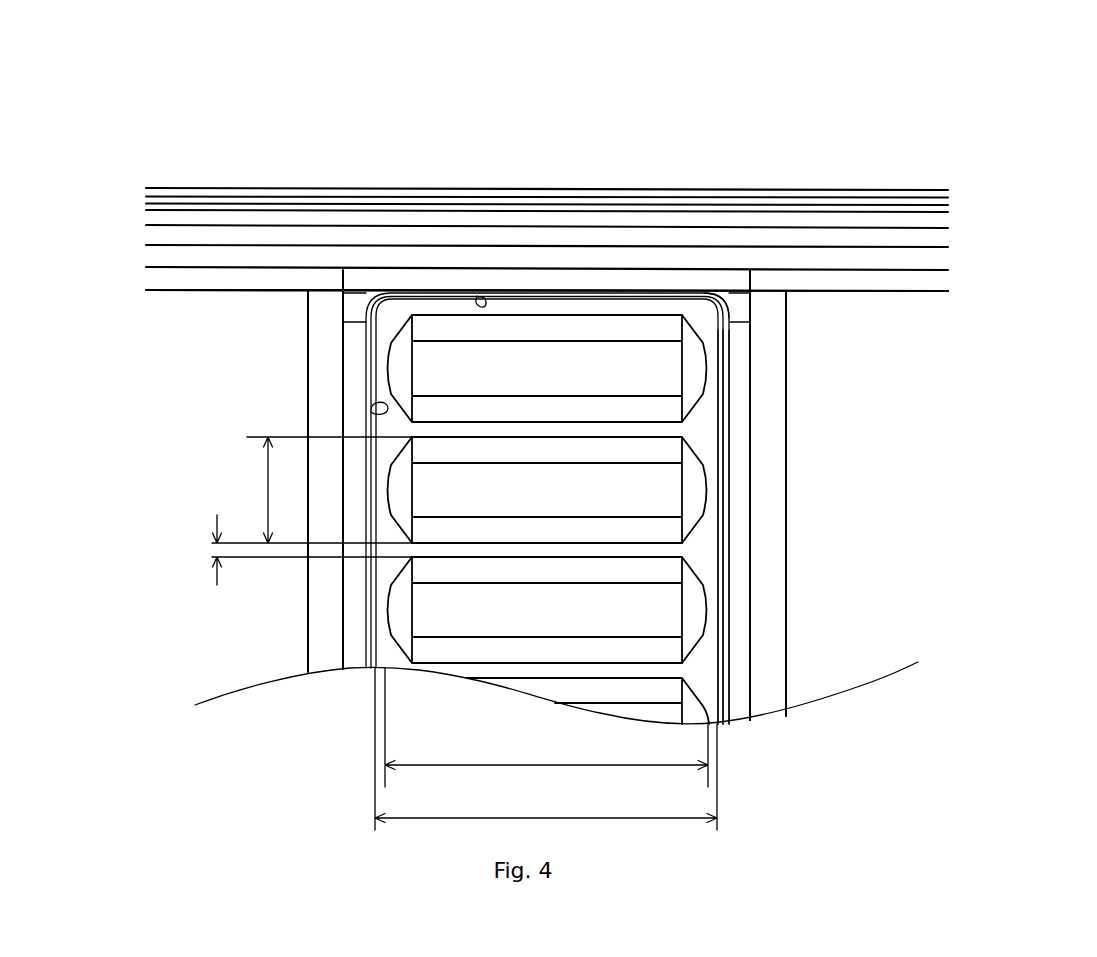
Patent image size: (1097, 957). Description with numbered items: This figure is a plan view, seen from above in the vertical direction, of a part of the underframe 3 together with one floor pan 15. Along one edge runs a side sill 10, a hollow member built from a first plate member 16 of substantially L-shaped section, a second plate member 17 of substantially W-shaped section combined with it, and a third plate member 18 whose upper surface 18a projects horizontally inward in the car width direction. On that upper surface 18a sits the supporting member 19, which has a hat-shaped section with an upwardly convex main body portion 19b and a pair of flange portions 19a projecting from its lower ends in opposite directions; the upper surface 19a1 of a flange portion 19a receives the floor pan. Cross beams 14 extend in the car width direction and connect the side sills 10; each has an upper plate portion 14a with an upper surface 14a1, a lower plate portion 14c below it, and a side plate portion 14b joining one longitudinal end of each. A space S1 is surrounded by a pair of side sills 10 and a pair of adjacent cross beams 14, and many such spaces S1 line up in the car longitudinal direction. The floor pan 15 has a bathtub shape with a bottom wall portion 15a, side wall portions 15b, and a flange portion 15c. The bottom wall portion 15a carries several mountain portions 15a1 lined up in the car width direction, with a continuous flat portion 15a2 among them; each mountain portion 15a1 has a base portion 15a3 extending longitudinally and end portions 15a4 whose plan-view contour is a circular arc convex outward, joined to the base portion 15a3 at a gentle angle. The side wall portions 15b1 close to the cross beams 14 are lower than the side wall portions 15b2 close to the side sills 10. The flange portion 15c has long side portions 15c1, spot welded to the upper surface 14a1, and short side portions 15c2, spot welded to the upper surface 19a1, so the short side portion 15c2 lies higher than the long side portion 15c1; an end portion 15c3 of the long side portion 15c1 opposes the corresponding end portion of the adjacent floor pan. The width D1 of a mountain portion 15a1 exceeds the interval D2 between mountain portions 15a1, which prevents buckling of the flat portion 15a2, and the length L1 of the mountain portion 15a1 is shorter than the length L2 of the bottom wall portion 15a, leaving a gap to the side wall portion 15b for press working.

The underframe 3 is at (948, 114).
The side sill 10 is at (856, 179).
The first plate member 16 is at (942, 195).
The second plate member 17 is at (942, 202).
The third plate member 18 is at (942, 218).
The upper surface 18a is at (942, 224).
The supporting member 19 is at (1010, 232).
The flange portion 19a is at (945, 278).
The upper surface 19a1 is at (148, 277).
The main body portion 19b is at (945, 258).
The cross beam 14 is at (298, 322).
The upper plate portion 14a is at (770, 655).
The upper surface 14a1 is at (768, 367).
The side plate portion 14b is at (728, 683).
The lower plate portion 14c is at (745, 697).
The floor pan 15 is at (333, 356).
The bottom wall portion 15a is at (702, 547).
The mountain portion 15a1 is at (693, 615).
The flat portion 15a2 is at (702, 572).
The base portion 15a3 is at (612, 318).
The end portion 15a4 is at (692, 325).
The side wall portion 15b is at (716, 517).
The side wall portion 15b1 is at (371, 410).
The side wall portion 15b2 is at (477, 296).
The flange portion 15c is at (738, 453).
The long side portion 15c1 is at (738, 418).
The short side portion 15c2 is at (752, 277).
The end portion 15c3 is at (752, 482).
The space S1 is at (164, 316).
The width D1 is at (322, 490).
The interval D2 is at (293, 550).
The length L1 is at (546, 727).
The length L2 is at (546, 749).